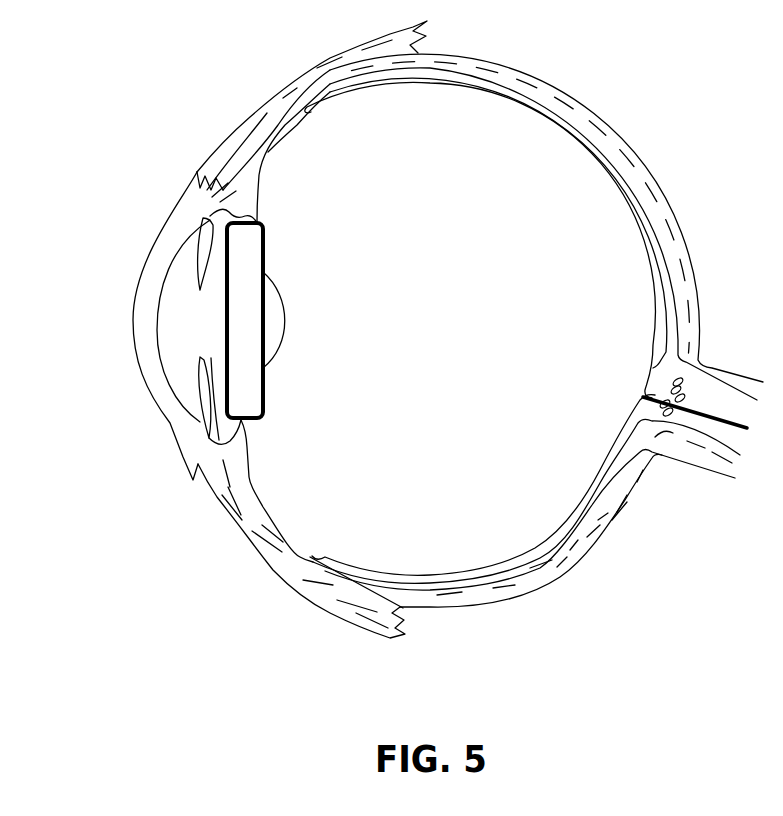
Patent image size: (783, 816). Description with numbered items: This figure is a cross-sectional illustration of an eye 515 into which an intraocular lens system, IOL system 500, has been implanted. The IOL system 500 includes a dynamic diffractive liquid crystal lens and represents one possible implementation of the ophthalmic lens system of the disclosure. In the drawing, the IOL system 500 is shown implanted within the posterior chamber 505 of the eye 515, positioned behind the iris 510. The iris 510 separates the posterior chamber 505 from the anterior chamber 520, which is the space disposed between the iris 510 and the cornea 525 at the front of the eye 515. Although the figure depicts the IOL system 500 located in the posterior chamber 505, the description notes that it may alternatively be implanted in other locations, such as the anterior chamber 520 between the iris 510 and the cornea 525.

The IOL system 500 is at (255, 256).
The posterior chamber 505 is at (215, 292).
The iris 510 is at (200, 380).
The eye 515 is at (452, 333).
The anterior chamber 520 is at (163, 327).
The cornea 525 is at (143, 308).